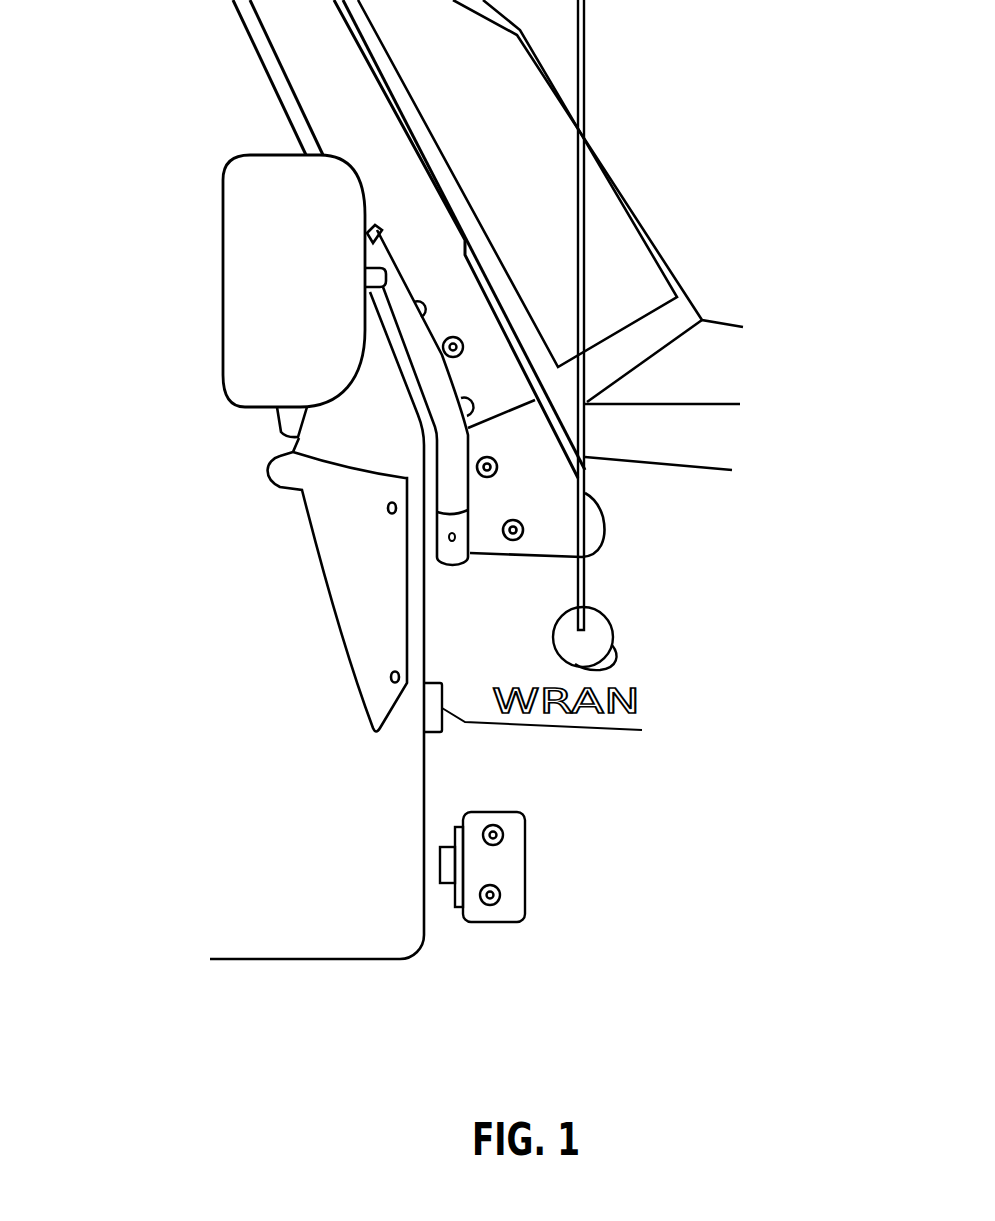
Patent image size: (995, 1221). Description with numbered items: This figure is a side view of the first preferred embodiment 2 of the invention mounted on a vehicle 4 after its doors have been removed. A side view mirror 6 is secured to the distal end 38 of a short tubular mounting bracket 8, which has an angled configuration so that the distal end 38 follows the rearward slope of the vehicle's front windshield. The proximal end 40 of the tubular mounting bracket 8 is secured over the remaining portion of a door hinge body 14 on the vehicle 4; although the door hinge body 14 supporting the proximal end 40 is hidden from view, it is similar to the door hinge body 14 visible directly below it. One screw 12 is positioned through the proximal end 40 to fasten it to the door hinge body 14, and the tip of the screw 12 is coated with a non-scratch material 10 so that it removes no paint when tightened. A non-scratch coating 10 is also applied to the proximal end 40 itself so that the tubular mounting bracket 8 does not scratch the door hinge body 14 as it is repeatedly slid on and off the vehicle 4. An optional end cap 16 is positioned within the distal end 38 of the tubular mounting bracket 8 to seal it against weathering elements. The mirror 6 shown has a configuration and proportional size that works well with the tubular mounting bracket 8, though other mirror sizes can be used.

The first preferred embodiment 2 is at (207, 274).
The vehicle 4 is at (690, 284).
The side view mirror 6 is at (268, 173).
The tubular mounting bracket 8 is at (457, 372).
The non-scratch material 10 is at (450, 552).
The screw 12 is at (448, 538).
The door hinge body 14 is at (472, 868).
The end cap 16 is at (382, 223).
The distal end 38 is at (414, 273).
The proximal end 40 is at (483, 505).